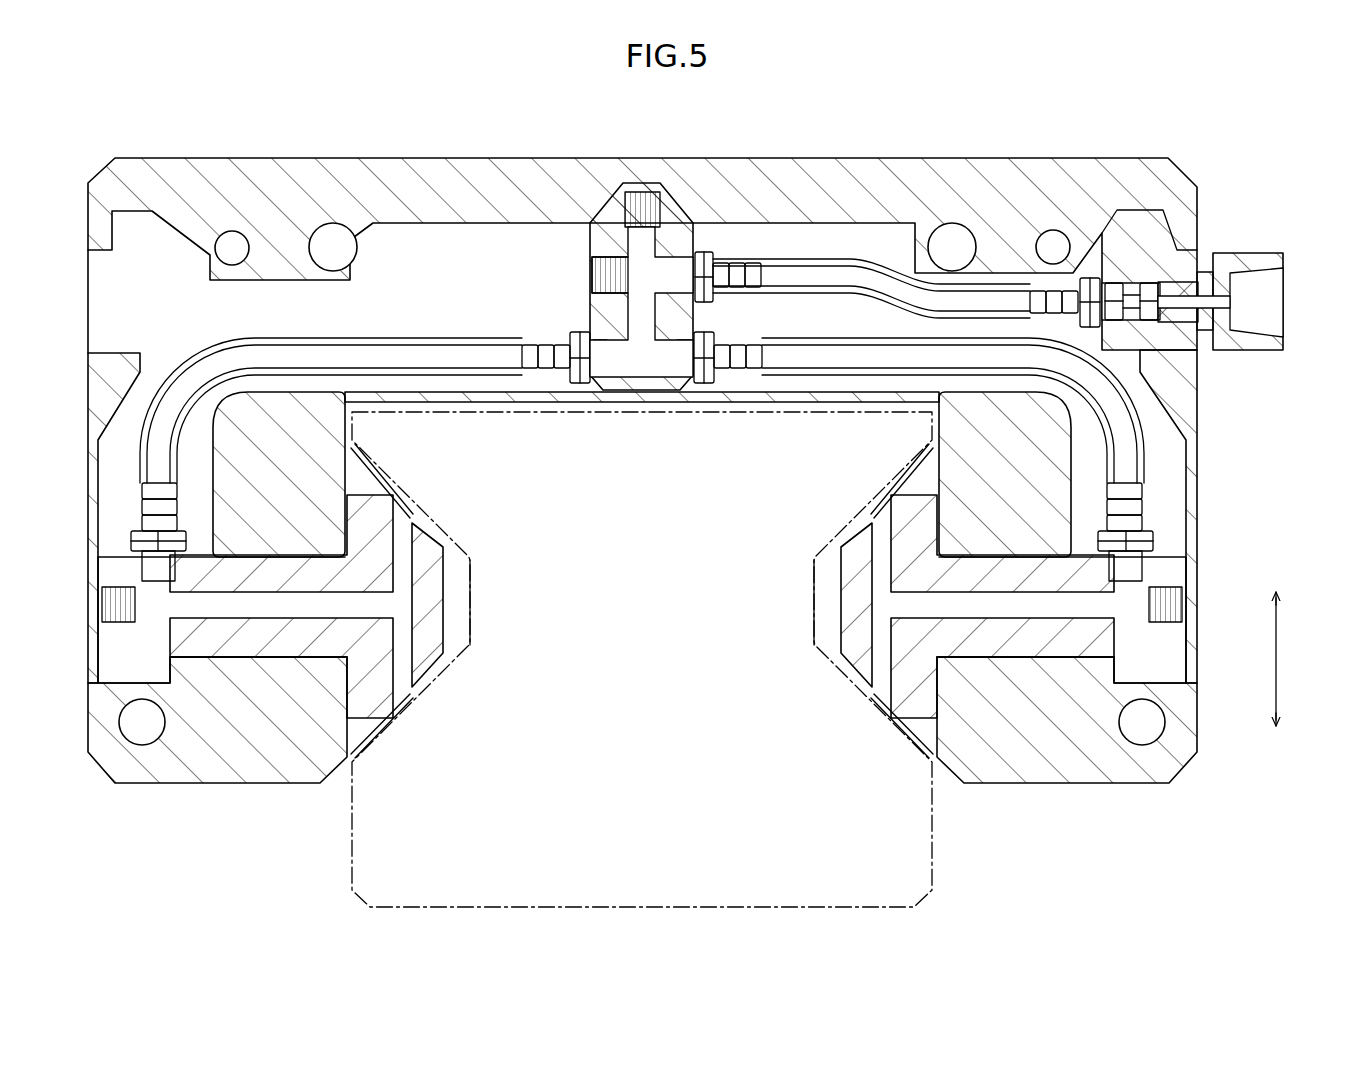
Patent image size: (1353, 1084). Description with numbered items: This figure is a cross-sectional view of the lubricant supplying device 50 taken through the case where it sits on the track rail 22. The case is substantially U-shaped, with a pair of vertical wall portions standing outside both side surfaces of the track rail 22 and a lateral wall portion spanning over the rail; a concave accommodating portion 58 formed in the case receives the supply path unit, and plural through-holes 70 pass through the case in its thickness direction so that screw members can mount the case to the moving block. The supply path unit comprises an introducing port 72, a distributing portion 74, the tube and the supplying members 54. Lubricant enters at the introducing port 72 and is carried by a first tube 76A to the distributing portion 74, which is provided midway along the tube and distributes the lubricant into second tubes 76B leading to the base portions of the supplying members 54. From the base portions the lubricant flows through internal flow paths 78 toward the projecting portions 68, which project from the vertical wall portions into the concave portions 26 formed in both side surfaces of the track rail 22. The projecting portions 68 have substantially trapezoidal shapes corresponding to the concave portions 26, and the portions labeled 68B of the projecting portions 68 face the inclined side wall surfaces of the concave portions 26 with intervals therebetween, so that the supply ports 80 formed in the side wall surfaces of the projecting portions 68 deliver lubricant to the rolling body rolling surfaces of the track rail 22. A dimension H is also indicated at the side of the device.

The lubricant supply device / slider body 50 is at (1192, 146).
The accommodating portion 58 is at (462, 226).
The through-holes 70 is at (333, 240).
The distributing portion 74 is at (590, 236).
The first tube 76A is at (822, 263).
The second tubes 76B is at (425, 340).
The introducing port 72 is at (1256, 254).
The supply ports 80 is at (400, 502).
The contact pad 68B is at (440, 530).
The projecting portions 68 is at (452, 598).
The concave portions 26 is at (468, 630).
The internal flow paths 78 is at (238, 607).
The supplying members 54 is at (361, 727).
The track rail 22 is at (682, 911).
The height dimension H is at (1276, 662).